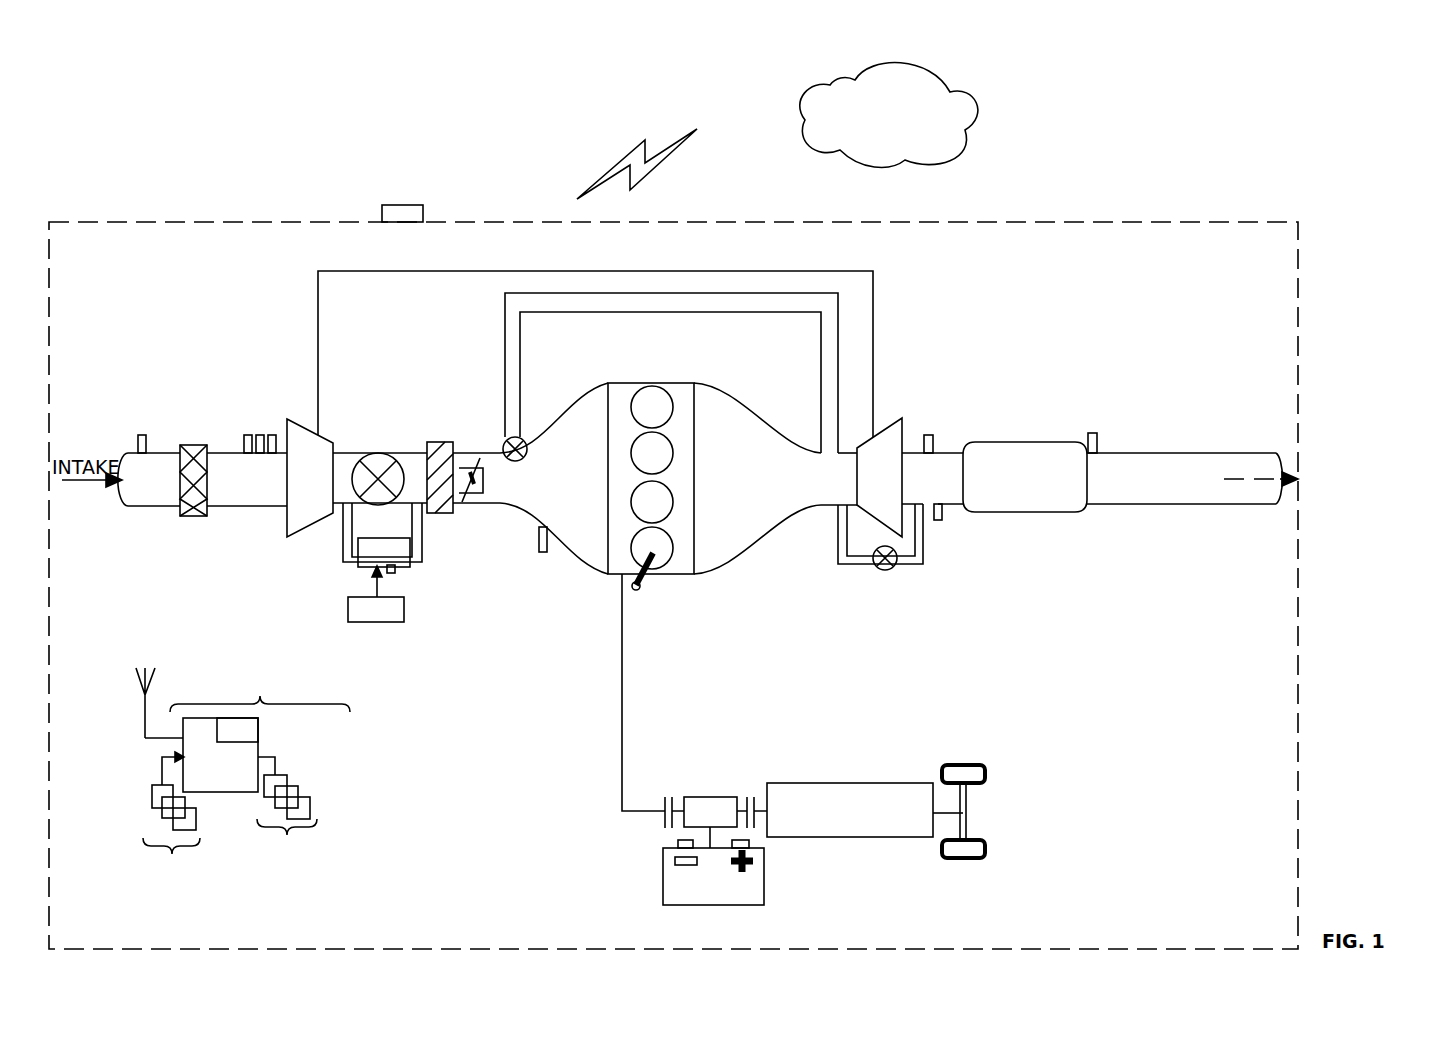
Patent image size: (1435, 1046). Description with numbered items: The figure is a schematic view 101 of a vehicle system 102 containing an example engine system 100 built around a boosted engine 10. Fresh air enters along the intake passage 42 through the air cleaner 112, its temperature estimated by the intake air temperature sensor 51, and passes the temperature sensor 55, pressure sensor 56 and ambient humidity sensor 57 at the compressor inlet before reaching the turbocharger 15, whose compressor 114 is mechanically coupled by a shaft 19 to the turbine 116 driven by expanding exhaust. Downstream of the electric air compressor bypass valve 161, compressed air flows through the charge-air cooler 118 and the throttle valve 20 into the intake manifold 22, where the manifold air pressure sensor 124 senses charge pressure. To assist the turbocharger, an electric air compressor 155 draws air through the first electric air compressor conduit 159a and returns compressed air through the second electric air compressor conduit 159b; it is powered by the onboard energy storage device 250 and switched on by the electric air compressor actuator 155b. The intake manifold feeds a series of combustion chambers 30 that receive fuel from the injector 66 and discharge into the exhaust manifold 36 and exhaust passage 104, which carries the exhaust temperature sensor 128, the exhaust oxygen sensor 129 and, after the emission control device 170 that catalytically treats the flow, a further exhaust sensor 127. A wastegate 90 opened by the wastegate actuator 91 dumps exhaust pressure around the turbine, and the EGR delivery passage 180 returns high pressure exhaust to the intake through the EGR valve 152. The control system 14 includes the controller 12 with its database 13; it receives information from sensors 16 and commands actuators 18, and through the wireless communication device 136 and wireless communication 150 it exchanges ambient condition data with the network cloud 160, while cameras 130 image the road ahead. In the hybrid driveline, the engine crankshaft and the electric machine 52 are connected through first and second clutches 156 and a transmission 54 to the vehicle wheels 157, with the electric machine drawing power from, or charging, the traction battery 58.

The schematic view 101 is at (1328, 90).
The vehicle system 102 is at (231, 221).
The engine system 100 is at (1134, 350).
The cameras 130 is at (400, 205).
The wireless communication 150 is at (617, 163).
The network cloud 160 is at (900, 167).
The intake passage 42 is at (140, 512).
The intake air temperature sensor 51 is at (142, 433).
The air cleaner 112 is at (193, 445).
The temperature sensor 55 is at (248, 433).
The pressure sensor 56 is at (260, 433).
The ambient humidity sensor 57 is at (272, 433).
The turbocharger 15 is at (576, 407).
The compressor 114 is at (310, 478).
The turbine 116 is at (879, 477).
The shaft 19 is at (693, 271).
The electric air compressor bypass valve 161 is at (366, 455).
The charge-air cooler 118 is at (435, 442).
The throttle valve 20 is at (481, 480).
The EGR valve 152 is at (528, 450).
The EGR delivery passage 180 is at (662, 312).
The intake manifold 22 is at (567, 477).
The manifold air pressure sensor 124 is at (539, 535).
The engine 10 is at (667, 478).
The combustion chambers 30 is at (668, 395).
The injector 66 is at (645, 590).
The exhaust manifold 36 is at (775, 478).
The exhaust passage 104 is at (963, 512).
The exhaust oxygen sensor 129 is at (928, 433).
The exhaust temperature sensor 128 is at (938, 520).
The emission control device 170 is at (980, 442).
The exhaust sensor 127 is at (1092, 432).
The wastegate 90 is at (842, 563).
The wastegate actuator 91 is at (885, 570).
The first electric air compressor conduit 159a is at (343, 560).
The second electric air compressor conduit 159b is at (412, 555).
The electric air compressor 155 is at (384, 552).
The electric air compressor actuator 155b is at (395, 572).
The onboard energy storage device 250 is at (376, 594).
The control system 14 is at (560, 779).
The controller 12 is at (220, 755).
The database 13 is at (237, 730).
The wireless communication device 136 is at (144, 737).
The sensors 16 is at (175, 822).
The actuators 18 is at (295, 819).
The clutches 156 is at (666, 797).
The electric machine 52 is at (700, 797).
The transmission 54 is at (893, 838).
The traction battery 58 is at (765, 878).
The vehicle wheels 157 is at (962, 858).